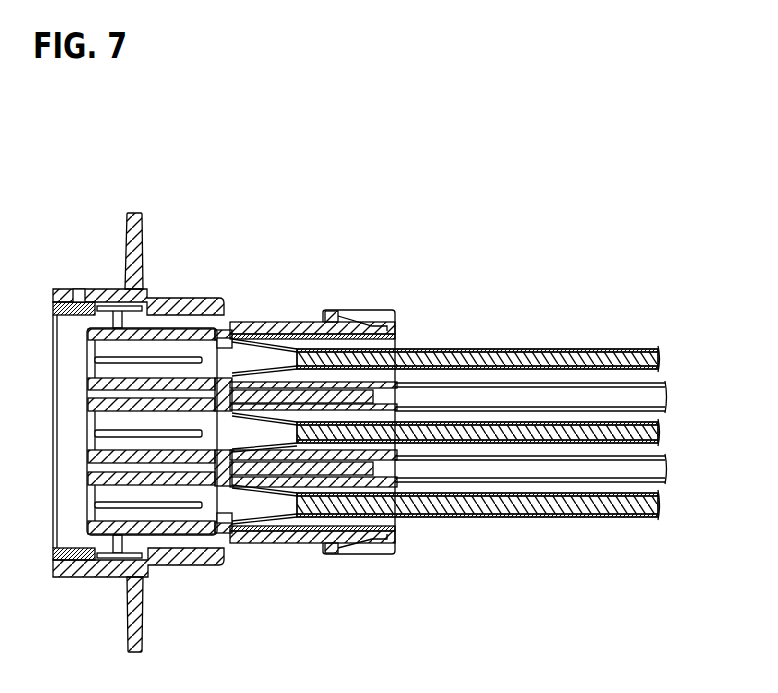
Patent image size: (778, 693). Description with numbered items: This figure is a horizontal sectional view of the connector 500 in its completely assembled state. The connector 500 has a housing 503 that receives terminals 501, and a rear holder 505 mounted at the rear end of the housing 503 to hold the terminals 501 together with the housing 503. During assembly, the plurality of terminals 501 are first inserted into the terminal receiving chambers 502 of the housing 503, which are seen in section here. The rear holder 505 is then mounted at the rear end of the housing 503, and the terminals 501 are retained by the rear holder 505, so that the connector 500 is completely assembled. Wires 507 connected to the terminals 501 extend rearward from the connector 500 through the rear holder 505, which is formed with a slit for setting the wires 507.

The connector 500 is at (165, 192).
The terminals 501 is at (250, 355).
The terminal receiving chambers 502 is at (153, 348).
The housing 503 is at (213, 576).
The rear holder 505 is at (387, 304).
The wires 507 is at (513, 528).